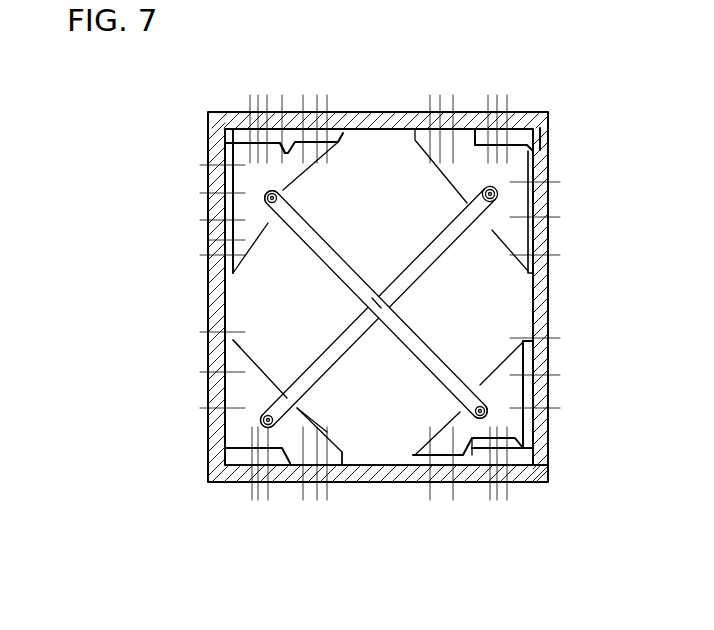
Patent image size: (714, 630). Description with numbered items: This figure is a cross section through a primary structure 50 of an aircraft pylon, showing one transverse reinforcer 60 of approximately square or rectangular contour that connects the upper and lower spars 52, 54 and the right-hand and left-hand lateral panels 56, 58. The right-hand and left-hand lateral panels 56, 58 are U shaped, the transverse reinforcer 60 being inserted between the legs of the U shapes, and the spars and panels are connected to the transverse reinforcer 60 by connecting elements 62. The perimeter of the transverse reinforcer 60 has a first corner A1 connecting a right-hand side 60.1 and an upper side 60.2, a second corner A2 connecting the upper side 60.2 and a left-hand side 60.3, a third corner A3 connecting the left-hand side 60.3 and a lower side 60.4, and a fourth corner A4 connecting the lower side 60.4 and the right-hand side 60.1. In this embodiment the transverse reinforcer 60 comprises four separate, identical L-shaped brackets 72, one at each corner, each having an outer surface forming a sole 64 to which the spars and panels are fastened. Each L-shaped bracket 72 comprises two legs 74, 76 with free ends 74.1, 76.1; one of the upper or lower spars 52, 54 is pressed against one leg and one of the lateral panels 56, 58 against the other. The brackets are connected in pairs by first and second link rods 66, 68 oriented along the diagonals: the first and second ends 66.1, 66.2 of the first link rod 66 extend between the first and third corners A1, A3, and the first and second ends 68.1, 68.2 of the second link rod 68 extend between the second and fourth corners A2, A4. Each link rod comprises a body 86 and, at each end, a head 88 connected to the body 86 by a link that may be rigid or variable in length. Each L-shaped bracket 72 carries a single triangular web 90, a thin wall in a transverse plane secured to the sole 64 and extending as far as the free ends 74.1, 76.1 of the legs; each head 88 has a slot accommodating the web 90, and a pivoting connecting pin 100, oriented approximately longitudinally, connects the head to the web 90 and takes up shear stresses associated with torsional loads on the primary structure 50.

The primary structure 50 is at (214, 501).
The upper spar 52 is at (365, 112).
The lower spar 54 is at (380, 482).
The right-hand lateral panel 56 is at (540, 272).
The left-hand lateral panel 58 is at (230, 272).
The transverse reinforcer 60 is at (278, 134).
The right-hand side 60.1 is at (542, 207).
The upper side 60.2 is at (342, 112).
The left-hand side 60.3 is at (218, 258).
The lower side 60.4 is at (322, 482).
The connecting element 62 is at (452, 125).
The sole 64 is at (440, 116).
The first link rod 66 is at (381, 307).
The first end of first link rod 66.1 is at (462, 205).
The second end of first link rod 66.2 is at (300, 388).
The second link rod 68 is at (378, 305).
The first end of second link rod 68.1 is at (262, 232).
The second end of second link rod 68.2 is at (478, 398).
The L-shaped bracket 72 is at (210, 163).
The leg 74 is at (290, 150).
The free end of leg 74.1 is at (238, 338).
The leg 76 is at (245, 337).
The free end of leg 76.1 is at (355, 448).
The body 86 is at (400, 288).
The head 88 is at (283, 198).
The web 90 is at (333, 165).
The pivoting connecting pin 100 is at (491, 186).
The first corner A1 is at (540, 150).
The second corner A2 is at (225, 152).
The third corner A3 is at (230, 443).
The fourth corner A4 is at (532, 470).